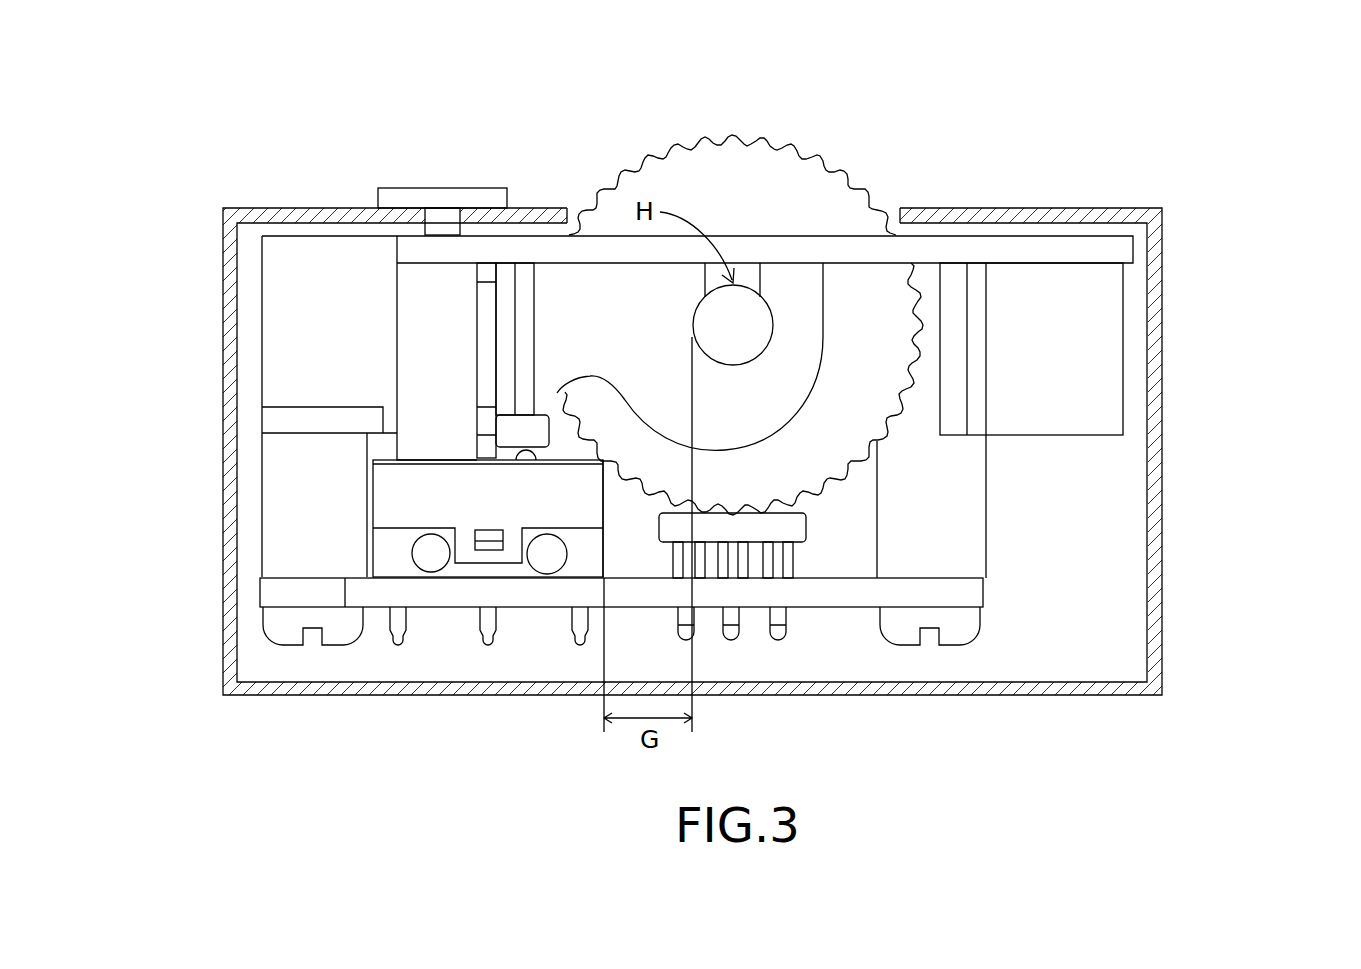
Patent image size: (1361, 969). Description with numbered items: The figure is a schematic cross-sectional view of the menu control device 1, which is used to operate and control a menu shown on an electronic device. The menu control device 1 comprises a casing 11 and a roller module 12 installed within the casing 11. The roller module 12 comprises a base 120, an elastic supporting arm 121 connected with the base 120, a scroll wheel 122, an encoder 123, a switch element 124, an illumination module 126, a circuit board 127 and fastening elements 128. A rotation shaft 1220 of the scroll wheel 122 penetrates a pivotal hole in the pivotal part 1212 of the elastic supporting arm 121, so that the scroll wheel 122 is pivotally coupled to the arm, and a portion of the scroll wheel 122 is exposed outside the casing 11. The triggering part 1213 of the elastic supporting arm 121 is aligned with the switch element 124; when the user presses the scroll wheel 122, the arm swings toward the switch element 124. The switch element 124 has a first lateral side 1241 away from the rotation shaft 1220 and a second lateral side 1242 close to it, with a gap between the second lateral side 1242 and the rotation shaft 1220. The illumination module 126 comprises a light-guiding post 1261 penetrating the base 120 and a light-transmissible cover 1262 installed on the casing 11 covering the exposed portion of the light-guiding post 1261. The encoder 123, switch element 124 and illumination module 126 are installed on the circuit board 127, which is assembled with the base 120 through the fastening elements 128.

The menu control device 1 is at (986, 81).
The casing 11 is at (1105, 215).
The roller module 12 is at (1016, 544).
The base 120 is at (295, 338).
The elastic supporting arm 121 is at (1250, 312).
The pivotal part 1212 is at (803, 367).
The triggering part 1213 is at (527, 363).
The scroll wheel 122 is at (812, 188).
The rotation shaft 1220 is at (710, 325).
The encoder 123 is at (767, 528).
The switch element 124 is at (497, 507).
The first lateral side 1241 is at (364, 498).
The second lateral side 1242 is at (617, 514).
The illumination module 126 is at (1250, 312).
The light-guiding post 1261 is at (443, 220).
The light-transmissible cover 1262 is at (448, 196).
The circuit board 127 is at (777, 592).
The fastening element 128 is at (283, 623).